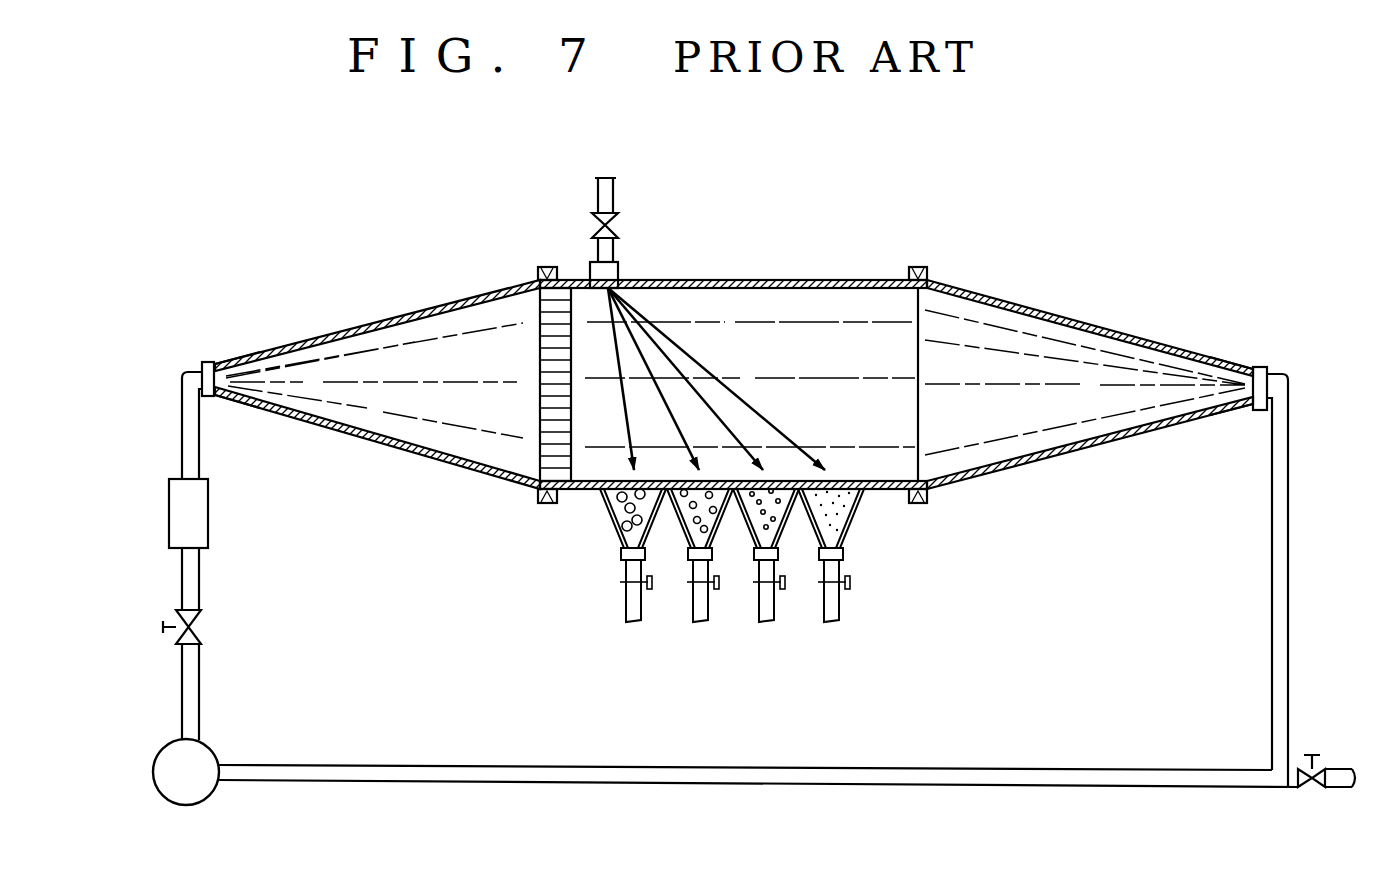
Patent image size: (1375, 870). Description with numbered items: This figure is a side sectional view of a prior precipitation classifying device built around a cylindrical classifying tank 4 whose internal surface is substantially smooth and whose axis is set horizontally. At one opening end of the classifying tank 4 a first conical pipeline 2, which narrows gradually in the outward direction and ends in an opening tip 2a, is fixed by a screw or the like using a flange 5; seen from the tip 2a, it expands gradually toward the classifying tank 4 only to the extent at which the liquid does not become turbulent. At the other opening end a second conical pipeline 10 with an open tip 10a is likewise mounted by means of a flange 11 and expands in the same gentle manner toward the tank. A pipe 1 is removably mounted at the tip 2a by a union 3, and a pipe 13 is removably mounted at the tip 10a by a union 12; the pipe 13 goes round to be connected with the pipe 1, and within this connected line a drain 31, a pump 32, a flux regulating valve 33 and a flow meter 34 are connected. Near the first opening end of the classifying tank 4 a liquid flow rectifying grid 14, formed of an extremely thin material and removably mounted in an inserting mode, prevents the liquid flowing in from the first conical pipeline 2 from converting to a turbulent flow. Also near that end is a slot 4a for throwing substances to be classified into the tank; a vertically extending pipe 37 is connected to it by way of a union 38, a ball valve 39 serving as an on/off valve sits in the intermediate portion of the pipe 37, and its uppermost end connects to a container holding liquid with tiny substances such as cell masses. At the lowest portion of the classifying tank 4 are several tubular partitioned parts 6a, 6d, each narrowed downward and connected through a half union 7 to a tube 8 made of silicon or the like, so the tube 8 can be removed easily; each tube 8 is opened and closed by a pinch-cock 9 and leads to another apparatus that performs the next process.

The pipe 1 is at (183, 407).
The first conical pipeline 2 is at (307, 338).
The opening tip 2a is at (222, 363).
The union 3 is at (203, 365).
The classifying tank 4 is at (796, 280).
The slot 4a is at (618, 283).
The flange 5 is at (538, 275).
The tubular partitioned part 6a is at (607, 507).
The tubular partitioned part 6d is at (853, 513).
The half union 7 is at (622, 552).
The tube 8 is at (622, 602).
The pinch-cock 9 is at (652, 584).
The second conical pipeline 10 is at (1117, 332).
The open tip 10a is at (1248, 363).
The flange 11 is at (926, 270).
The union 12 is at (1267, 367).
The pipe 13 is at (1290, 422).
The liquid flow rectifying grid 14 is at (560, 405).
The drain 31 is at (1318, 758).
The pump 32 is at (160, 752).
The flux regulating valve 33 is at (163, 627).
The flow meter 34 is at (169, 505).
The pipe 37 is at (614, 190).
The union 38 is at (590, 265).
The ball valve 39 is at (592, 218).